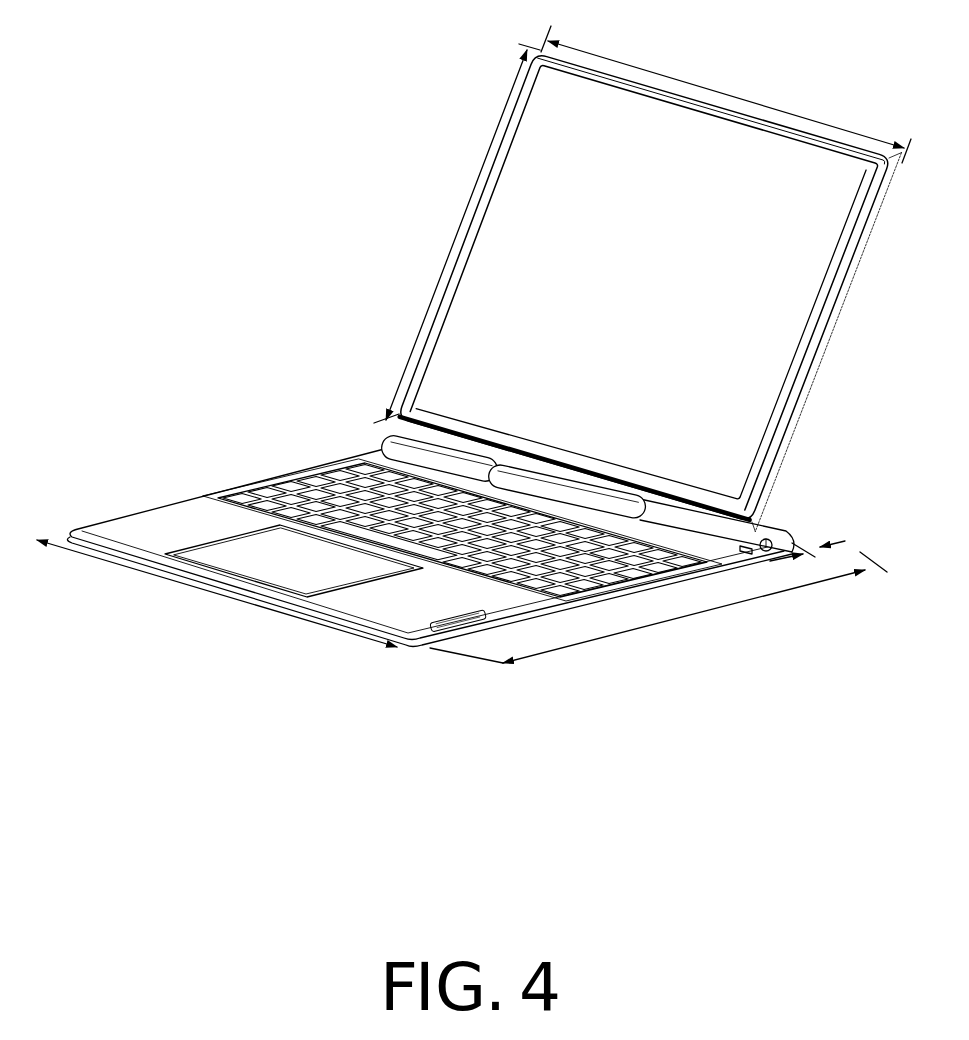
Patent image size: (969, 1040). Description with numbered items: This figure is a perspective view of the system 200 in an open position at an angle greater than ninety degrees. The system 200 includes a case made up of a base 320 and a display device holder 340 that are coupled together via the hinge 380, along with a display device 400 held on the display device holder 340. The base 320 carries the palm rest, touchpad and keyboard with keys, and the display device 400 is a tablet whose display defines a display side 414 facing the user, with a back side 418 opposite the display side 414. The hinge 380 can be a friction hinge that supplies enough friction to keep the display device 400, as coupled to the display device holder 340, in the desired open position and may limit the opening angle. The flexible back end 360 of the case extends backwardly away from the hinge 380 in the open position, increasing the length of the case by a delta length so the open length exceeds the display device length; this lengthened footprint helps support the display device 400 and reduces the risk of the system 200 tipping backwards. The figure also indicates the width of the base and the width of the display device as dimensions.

The system 200 is at (358, 72).
The base 320 is at (197, 510).
The display device holder 340 is at (855, 285).
The flexible back end 360 is at (762, 532).
The hinge 380 is at (597, 490).
The display device 400 is at (863, 227).
The display side 414 is at (651, 283).
The back side 418 is at (823, 343).